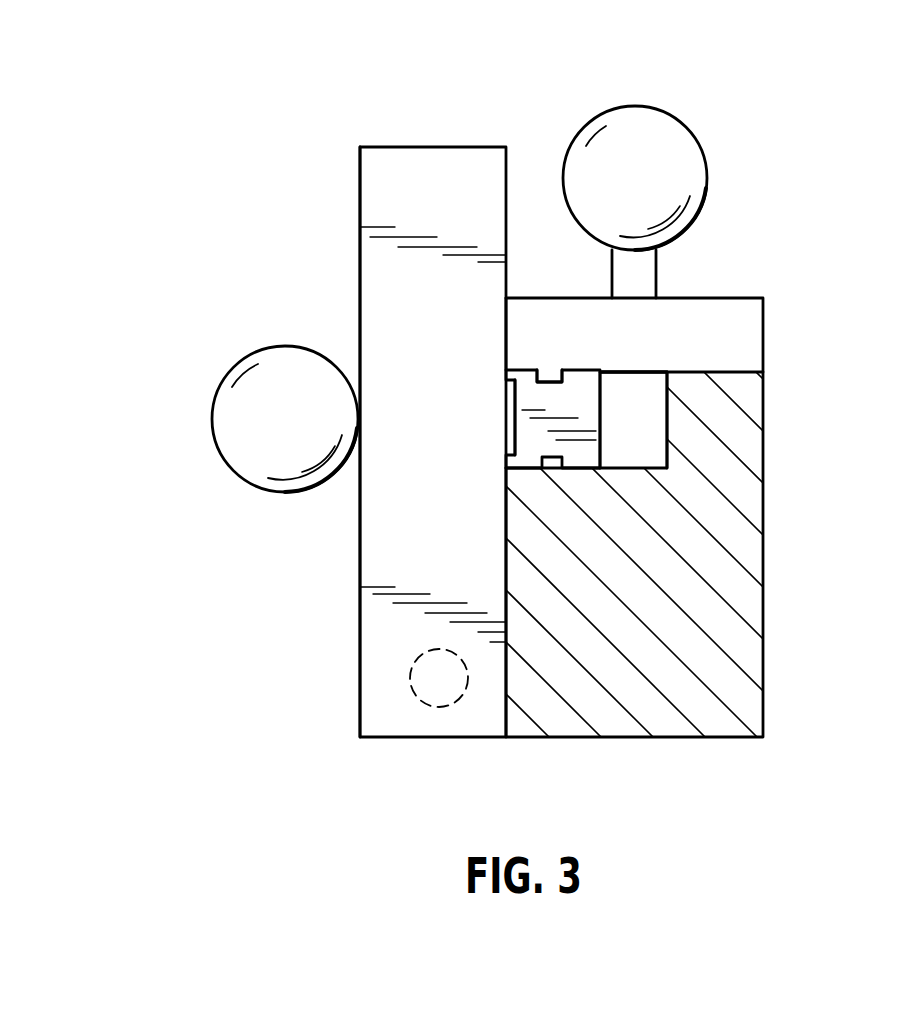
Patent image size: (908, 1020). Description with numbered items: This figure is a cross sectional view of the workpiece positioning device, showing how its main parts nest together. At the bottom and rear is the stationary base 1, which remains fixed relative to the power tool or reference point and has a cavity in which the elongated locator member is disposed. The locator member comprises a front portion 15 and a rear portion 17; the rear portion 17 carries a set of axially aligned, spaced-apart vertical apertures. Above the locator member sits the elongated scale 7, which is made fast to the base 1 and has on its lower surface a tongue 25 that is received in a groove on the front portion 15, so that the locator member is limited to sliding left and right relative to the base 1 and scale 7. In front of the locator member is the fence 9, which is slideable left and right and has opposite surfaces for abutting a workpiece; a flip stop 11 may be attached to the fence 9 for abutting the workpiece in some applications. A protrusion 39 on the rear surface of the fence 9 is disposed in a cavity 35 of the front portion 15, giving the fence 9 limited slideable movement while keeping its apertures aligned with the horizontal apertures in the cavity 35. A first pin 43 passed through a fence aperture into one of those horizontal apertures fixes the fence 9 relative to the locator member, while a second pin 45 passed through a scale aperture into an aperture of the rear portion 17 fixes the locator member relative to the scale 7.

The stationary base 1 is at (730, 570).
The elongated scale 7 is at (745, 300).
The fence 9 is at (460, 147).
The flip stop 11 is at (377, 303).
The front portion 15 is at (577, 384).
The rear portion 17 is at (647, 455).
The tongue 25 is at (553, 382).
The cavity 35 is at (517, 438).
The protrusion 39 is at (515, 423).
The first pin 43 is at (223, 425).
The second pin 45 is at (680, 135).